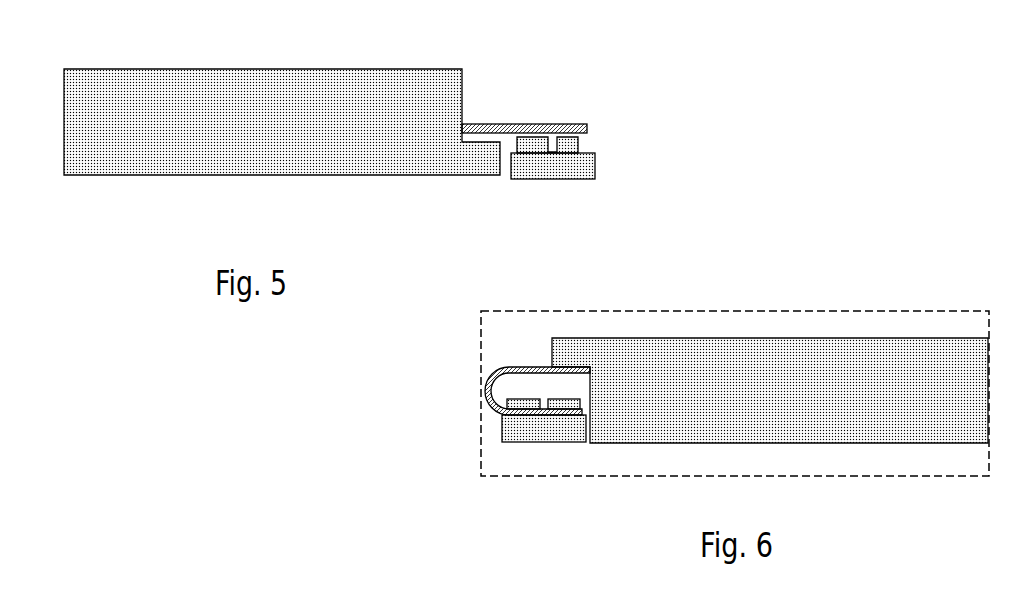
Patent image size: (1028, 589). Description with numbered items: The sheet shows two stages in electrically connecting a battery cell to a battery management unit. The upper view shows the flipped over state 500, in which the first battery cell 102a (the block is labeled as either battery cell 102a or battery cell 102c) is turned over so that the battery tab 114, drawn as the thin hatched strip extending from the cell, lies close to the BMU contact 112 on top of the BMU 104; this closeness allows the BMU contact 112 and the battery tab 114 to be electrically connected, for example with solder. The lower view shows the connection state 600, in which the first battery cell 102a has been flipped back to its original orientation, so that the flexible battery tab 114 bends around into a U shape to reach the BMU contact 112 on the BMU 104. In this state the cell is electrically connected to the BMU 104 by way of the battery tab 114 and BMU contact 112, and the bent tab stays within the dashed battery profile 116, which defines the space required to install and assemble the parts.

In FIG. 5, the first battery cell 102a is at (282, 122).
In FIG. 6, the first battery cell 102a is at (770, 390).
In FIG. 5, the housing portion 102c is at (282, 122).
In FIG. 6, the housing portion 102c is at (770, 390).
In FIG. 5, the BMU 104 is at (568, 181).
In FIG. 6, the BMU 104 is at (544, 428).
In FIG. 5, the BMU contact 112 is at (588, 145).
In FIG. 6, the BMU contact 112 is at (543, 394).
In FIG. 5, the battery tab 114 is at (534, 112).
In FIG. 6, the battery tab 114 is at (477, 380).
In FIG. 6, the battery profile 116 is at (505, 302).
In FIG. 5, the flipped over state 500 is at (157, 230).
In FIG. 6, the connection state 600 is at (485, 495).